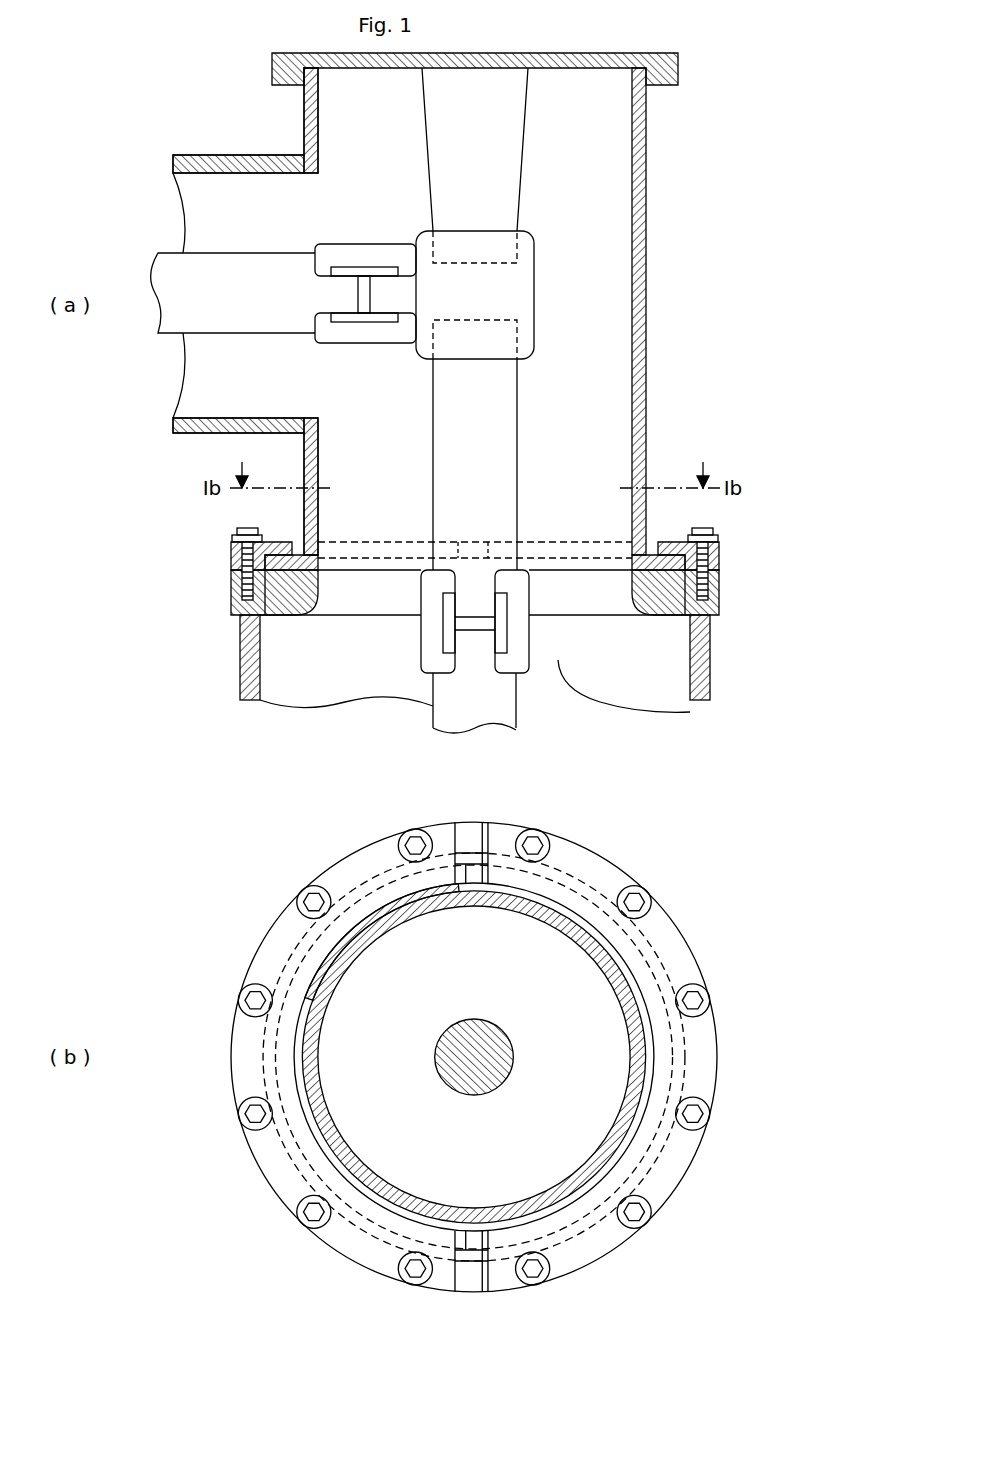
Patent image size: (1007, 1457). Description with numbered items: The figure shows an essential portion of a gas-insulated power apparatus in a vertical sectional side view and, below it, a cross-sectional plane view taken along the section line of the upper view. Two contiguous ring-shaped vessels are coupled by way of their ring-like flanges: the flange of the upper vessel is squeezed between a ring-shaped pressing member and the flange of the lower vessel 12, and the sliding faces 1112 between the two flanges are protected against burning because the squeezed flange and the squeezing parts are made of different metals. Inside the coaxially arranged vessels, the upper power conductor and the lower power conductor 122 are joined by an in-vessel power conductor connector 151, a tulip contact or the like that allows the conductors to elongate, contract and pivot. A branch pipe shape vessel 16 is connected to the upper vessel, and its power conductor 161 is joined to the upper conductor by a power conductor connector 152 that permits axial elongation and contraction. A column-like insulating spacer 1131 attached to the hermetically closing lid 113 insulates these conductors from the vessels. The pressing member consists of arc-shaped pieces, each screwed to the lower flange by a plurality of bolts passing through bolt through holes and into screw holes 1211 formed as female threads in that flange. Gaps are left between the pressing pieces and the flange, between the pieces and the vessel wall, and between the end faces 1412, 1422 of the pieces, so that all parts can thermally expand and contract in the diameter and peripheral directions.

The vessel 12 is at (710, 665).
The branch pipe shape vessel 16 is at (231, 155).
The lid 113 is at (563, 53).
The power conductor 122 is at (516, 700).
The in-vessel power conductor connector 151 is at (427, 668).
The power conductor connector 152 is at (360, 244).
The power conductor 161 is at (250, 253).
The sliding face 1112 is at (325, 573).
The column-like insulating spacer 1131 is at (520, 170).
The screw hole 1211 is at (231, 582).
The end face 1412 is at (455, 823).
The end face 1422 is at (488, 908).